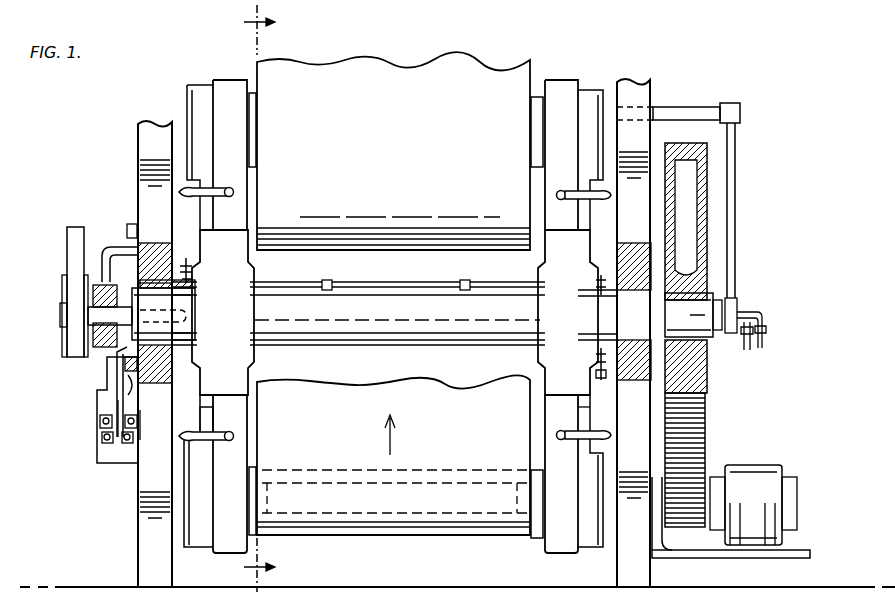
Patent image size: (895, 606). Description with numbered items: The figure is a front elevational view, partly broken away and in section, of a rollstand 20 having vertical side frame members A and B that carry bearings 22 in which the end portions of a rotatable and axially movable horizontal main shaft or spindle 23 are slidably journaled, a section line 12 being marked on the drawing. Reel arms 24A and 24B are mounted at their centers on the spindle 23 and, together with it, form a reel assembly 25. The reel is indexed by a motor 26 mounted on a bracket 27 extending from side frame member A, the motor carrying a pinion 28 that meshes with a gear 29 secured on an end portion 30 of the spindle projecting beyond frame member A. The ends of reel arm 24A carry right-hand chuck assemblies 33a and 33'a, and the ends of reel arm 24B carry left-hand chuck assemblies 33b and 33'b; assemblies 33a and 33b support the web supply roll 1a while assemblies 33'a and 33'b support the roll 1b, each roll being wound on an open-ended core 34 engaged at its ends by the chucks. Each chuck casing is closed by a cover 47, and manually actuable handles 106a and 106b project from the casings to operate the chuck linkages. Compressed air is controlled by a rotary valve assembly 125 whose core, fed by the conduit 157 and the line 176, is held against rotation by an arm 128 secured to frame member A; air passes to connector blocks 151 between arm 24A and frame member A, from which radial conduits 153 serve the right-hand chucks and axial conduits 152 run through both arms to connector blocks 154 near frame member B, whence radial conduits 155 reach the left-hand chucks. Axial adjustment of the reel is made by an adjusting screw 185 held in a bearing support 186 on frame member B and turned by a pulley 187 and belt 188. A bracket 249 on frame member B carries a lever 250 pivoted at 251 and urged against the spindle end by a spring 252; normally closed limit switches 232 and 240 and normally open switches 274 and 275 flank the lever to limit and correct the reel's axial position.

The web supply roll 1a is at (375, 537).
The web supply roll 1b is at (460, 70).
The section line 12 is at (267, 298).
The rollstand 20 is at (766, 108).
The bearings 22 is at (165, 243).
The main shaft or spindle 23 is at (425, 345).
The reel arm 24A is at (568, 93).
The reel arm 24B is at (230, 80).
The reel assembly 25 is at (680, 46).
The motor 26 is at (790, 465).
The bracket 27 is at (778, 558).
The pinion 28 is at (696, 530).
The gear 29 is at (707, 452).
The end portion of spindle 30 is at (712, 300).
The right-hand chuck assembly 33a is at (540, 550).
The left-hand chuck assembly 33b is at (251, 553).
The right-hand chuck assembly 33'a is at (554, 96).
The left-hand chuck assembly 33'b is at (300, 119).
The core 34 is at (445, 520).
The cover 47 is at (203, 548).
The operating handle 106a is at (556, 434).
The handle 106b is at (238, 434).
The rotary valve assembly 125 is at (771, 285).
The arm 128 is at (737, 172).
The connector blocks 151 is at (598, 284).
The axial conduits 152 is at (405, 285).
The radial conduits 153 is at (598, 374).
The connector blocks 154 is at (183, 292).
The radial conduits 155 is at (192, 270).
The line or conduit 157 is at (767, 338).
The line 176 is at (744, 352).
The adjusting screw 185 is at (90, 312).
The bearing support 186 is at (106, 250).
The pulley 187 is at (62, 293).
The belt 188 is at (67, 246).
The limit switch 232 is at (143, 422).
The limit switch 240 is at (100, 421).
The bracket 249 is at (97, 455).
The lever 250 is at (124, 406).
The pivot 251 is at (115, 368).
The spring 252 is at (128, 396).
The normally open switch 274 is at (100, 440).
The normally open switch 275 is at (125, 443).
The side frame member A is at (645, 92).
The side frame member B is at (160, 128).